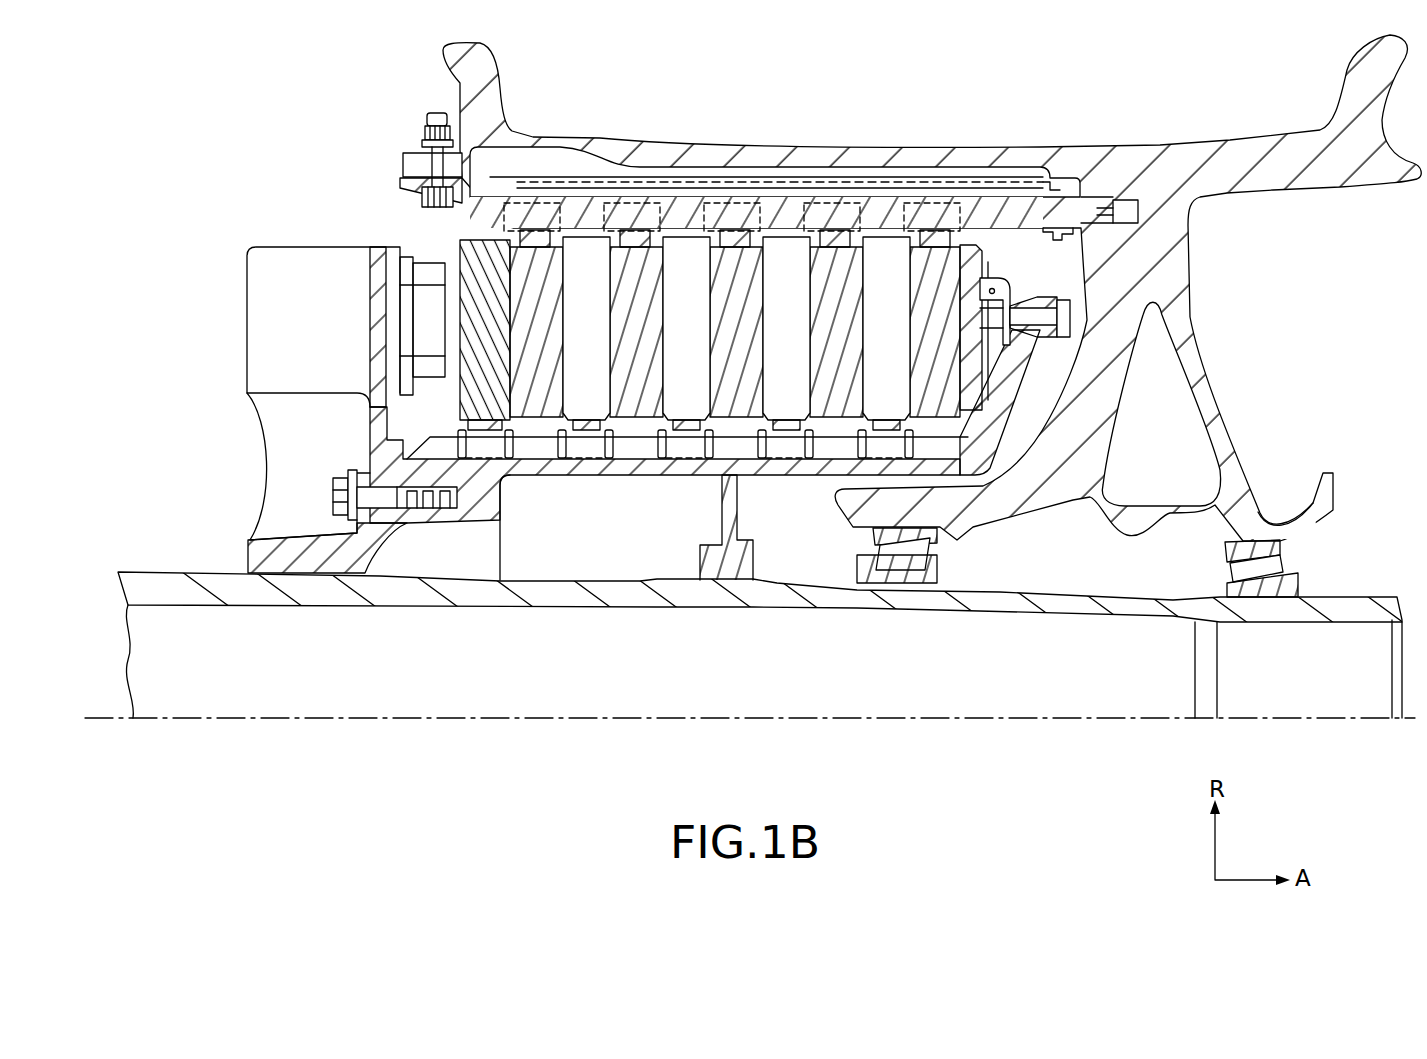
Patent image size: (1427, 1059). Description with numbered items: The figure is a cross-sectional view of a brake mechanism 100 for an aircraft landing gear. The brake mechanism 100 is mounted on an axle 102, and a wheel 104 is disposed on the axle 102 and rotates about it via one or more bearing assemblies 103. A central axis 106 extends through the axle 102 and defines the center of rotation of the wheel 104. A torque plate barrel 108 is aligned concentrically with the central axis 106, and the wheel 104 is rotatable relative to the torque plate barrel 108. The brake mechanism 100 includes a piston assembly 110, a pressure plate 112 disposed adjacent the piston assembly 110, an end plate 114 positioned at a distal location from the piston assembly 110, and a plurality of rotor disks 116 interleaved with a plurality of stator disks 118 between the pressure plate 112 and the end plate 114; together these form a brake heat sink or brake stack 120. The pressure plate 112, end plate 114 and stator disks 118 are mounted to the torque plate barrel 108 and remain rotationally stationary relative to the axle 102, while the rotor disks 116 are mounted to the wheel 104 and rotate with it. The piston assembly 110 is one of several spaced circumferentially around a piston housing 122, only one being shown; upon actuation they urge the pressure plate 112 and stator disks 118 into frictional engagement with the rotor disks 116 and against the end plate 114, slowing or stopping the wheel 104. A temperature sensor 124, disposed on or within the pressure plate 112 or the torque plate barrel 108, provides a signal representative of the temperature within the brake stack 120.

The brake mechanism 100 is at (256, 116).
The axle 102 is at (1057, 606).
The bearing assemblies 103 is at (1268, 563).
The wheel 104 is at (1153, 250).
The central axis 106 is at (1010, 720).
The torque plate barrel 108 is at (563, 480).
The piston assembly 110 is at (338, 223).
The pressure plate 112 is at (458, 243).
The end plate 114 is at (985, 262).
The rotor disks 116 is at (538, 258).
The stator disks 118 is at (684, 250).
The brake stack 120 is at (845, 266).
The piston housing 122 is at (258, 300).
The temperature sensor 124 is at (478, 389).